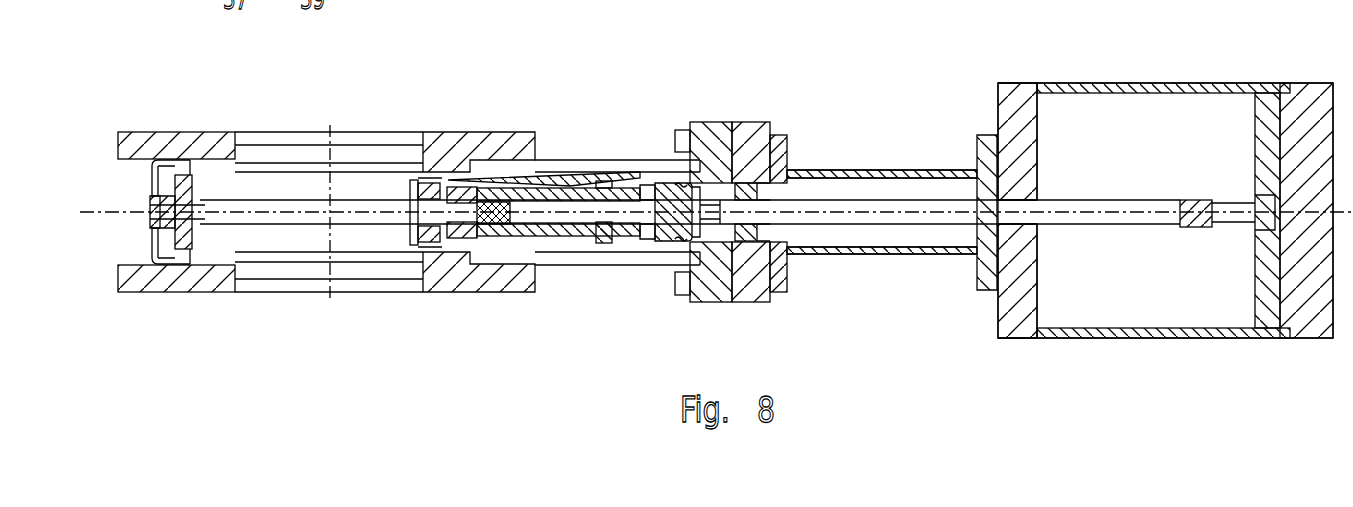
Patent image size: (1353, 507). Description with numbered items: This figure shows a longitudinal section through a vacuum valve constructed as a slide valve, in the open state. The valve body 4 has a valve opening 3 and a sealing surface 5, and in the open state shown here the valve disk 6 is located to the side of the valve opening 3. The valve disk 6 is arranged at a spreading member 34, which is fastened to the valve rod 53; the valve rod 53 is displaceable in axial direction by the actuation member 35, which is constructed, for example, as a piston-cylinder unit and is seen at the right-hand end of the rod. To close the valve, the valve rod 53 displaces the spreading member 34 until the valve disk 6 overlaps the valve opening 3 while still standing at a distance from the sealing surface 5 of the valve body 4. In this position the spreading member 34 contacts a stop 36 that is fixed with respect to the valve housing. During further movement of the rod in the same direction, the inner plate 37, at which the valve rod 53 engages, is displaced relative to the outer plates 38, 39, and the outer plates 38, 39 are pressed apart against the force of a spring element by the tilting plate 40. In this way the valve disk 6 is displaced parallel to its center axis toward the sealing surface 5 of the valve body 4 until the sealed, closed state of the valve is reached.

The valve opening 3 is at (262, 152).
The valve body 4 is at (173, 309).
The sealing surface 5 is at (235, 163).
The valve disk 6 is at (573, 183).
The spreading member 34 is at (446, 253).
The actuation member 35 is at (1048, 68).
The stop 36 is at (195, 242).
The inner plate 37 is at (475, 190).
The outer plate 38 is at (593, 182).
The outer plate 39 is at (592, 230).
The tilting plate 40 is at (490, 235).
The valve rod 53 is at (828, 210).